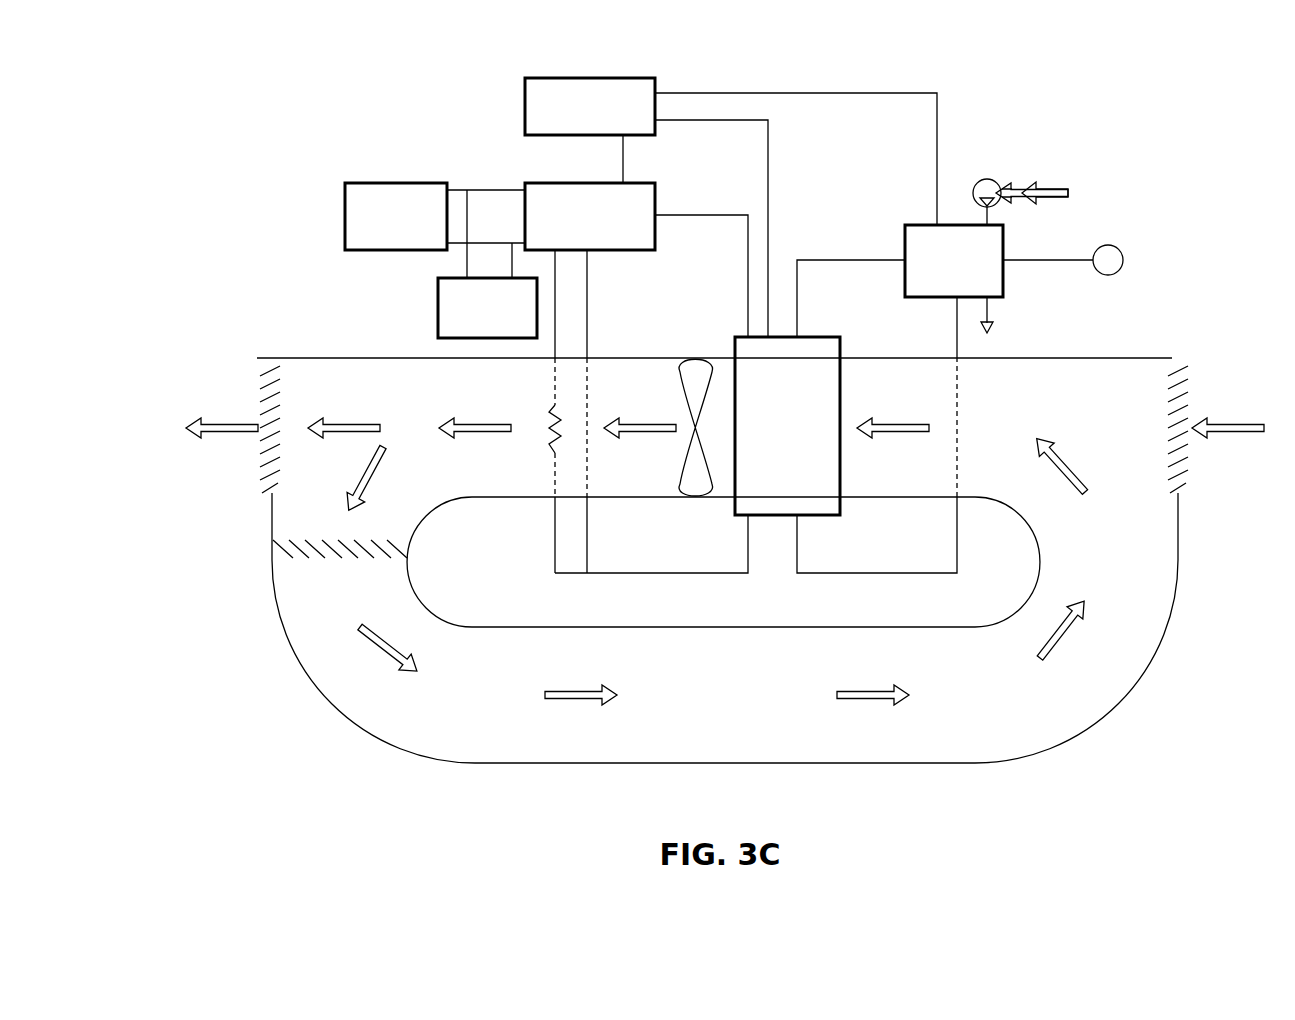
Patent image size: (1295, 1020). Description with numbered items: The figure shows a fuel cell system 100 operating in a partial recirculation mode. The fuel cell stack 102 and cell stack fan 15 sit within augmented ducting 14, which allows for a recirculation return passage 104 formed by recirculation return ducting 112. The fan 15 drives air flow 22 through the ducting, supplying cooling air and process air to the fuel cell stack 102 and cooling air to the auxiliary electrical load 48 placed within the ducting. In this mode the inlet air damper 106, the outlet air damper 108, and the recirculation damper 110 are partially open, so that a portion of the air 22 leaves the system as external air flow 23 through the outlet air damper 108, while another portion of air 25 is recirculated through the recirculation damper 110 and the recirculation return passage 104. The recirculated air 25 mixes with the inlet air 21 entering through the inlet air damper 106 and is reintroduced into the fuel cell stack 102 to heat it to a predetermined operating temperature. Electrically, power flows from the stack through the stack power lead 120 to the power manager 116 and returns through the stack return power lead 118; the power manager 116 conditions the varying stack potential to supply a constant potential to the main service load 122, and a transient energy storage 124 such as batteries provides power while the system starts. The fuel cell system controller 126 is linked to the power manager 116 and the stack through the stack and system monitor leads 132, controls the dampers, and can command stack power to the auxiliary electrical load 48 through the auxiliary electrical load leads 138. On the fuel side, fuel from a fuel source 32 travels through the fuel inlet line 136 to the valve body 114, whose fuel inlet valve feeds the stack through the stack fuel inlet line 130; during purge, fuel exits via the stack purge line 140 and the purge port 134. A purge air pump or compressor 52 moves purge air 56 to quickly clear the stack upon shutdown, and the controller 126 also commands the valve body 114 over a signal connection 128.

The fuel cell system 100 is at (308, 156).
The fuel cell stack 102 is at (820, 337).
The recirculation return passage 104 is at (793, 698).
The inlet air damper 106 is at (1184, 465).
The outlet air damper 108 is at (268, 490).
The recirculation damper 110 is at (372, 562).
The recirculation return ducting 112 is at (785, 627).
The valve body 114 is at (921, 224).
The power manager 116 is at (643, 183).
The stack return power lead 118 is at (589, 342).
The stack power lead 120 is at (678, 216).
The main service load 122 is at (345, 223).
The transient energy storage 124 is at (438, 307).
The fuel cell system controller 126 is at (525, 104).
The controller valve signal line 128 is at (847, 97).
The stack fuel inlet line 130 is at (877, 260).
The stack and system monitor leads 132 is at (769, 172).
The purge port 134 is at (994, 306).
The fuel inlet line 136 is at (1018, 260).
The auxiliary electrical load leads 138 is at (558, 294).
The stack purge line 140 is at (845, 573).
The augmented ducting 14 is at (1079, 358).
The cell stack fan 15 is at (688, 452).
The inlet air 21 is at (1230, 420).
The air flow 22 is at (352, 422).
The external air flow 23 is at (222, 422).
The re-circulated air 25 is at (407, 673).
The fuel source 32 is at (1119, 248).
The auxiliary electrical load 48 is at (550, 445).
The purge air pump or compressor 52 is at (989, 180).
The purge air 56 is at (1065, 188).